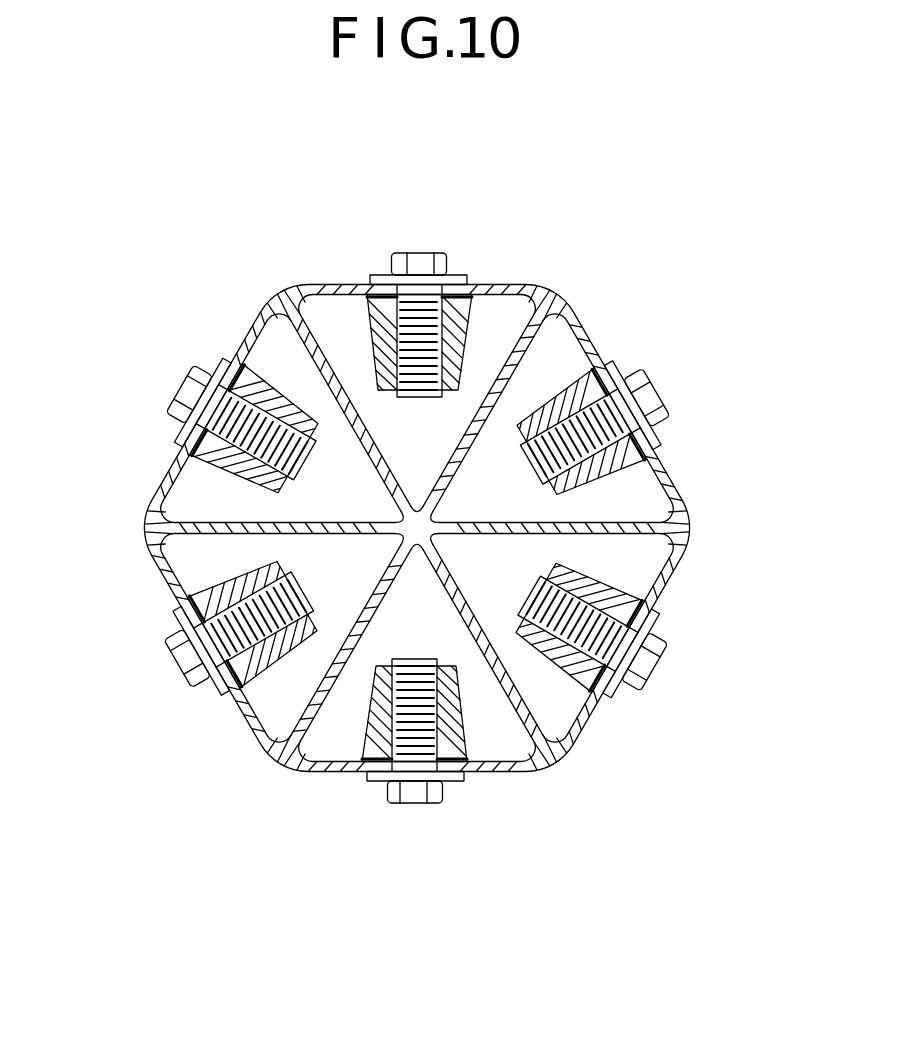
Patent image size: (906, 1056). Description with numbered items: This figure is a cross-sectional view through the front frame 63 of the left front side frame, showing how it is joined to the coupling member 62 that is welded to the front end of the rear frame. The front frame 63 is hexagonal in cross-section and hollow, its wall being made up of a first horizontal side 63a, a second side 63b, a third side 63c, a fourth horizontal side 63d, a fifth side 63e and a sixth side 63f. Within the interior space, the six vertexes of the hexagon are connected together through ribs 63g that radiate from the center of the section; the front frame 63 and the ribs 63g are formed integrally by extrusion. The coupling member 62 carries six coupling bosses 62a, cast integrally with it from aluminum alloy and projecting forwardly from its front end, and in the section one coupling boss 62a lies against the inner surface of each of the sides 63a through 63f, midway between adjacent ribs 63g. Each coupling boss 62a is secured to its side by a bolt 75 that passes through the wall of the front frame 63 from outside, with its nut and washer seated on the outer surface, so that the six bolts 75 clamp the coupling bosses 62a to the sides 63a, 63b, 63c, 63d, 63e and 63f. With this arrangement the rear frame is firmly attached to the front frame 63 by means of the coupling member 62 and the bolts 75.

The coupling member 62 is at (434, 509).
The front frame 63 is at (434, 490).
The first horizontal side 63a is at (358, 286).
The second side 63b is at (598, 356).
The third side 63c is at (673, 582).
The fourth horizontal side 63d is at (505, 776).
The fifth side 63e is at (243, 715).
The sixth side 63f is at (165, 478).
The ribs 63g is at (470, 528).
The coupling bosses 62a is at (458, 333).
The bolts 75 is at (422, 264).